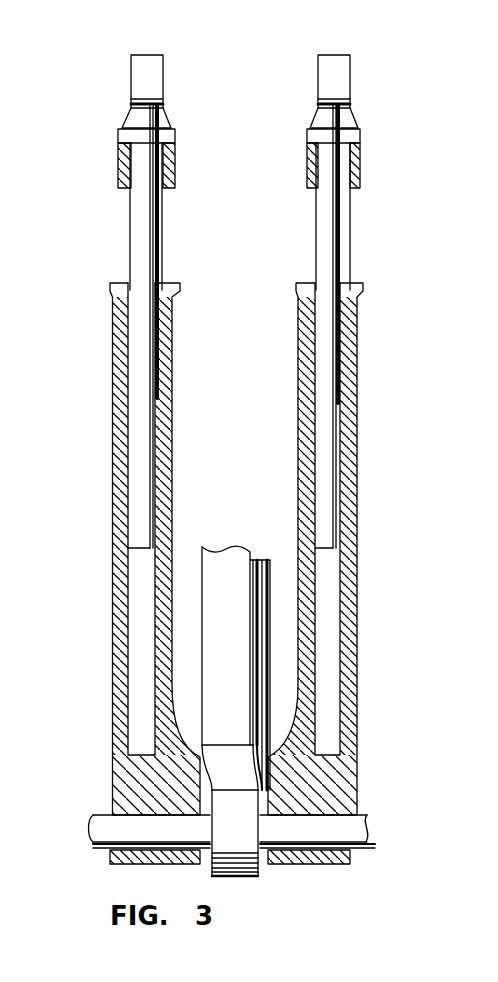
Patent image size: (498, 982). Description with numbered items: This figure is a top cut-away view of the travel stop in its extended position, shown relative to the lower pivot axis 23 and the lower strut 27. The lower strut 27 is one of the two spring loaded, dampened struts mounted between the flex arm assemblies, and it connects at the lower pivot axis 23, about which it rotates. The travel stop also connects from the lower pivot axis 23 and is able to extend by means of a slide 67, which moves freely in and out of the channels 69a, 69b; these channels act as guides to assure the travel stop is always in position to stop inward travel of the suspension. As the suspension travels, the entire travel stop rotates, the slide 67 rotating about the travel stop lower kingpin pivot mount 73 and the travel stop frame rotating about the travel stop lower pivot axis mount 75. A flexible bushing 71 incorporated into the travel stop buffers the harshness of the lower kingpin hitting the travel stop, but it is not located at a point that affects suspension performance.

The travel stop lower kingpin pivot mount 73 is at (317, 90).
The flexible bushing 71 is at (307, 148).
The slide 67 is at (327, 250).
The channel 69b is at (145, 597).
The channel 69a is at (325, 633).
The lower strut 27 is at (236, 576).
The lower pivot axis 23 is at (355, 835).
The travel stop lower pivot axis mount 75 is at (355, 862).